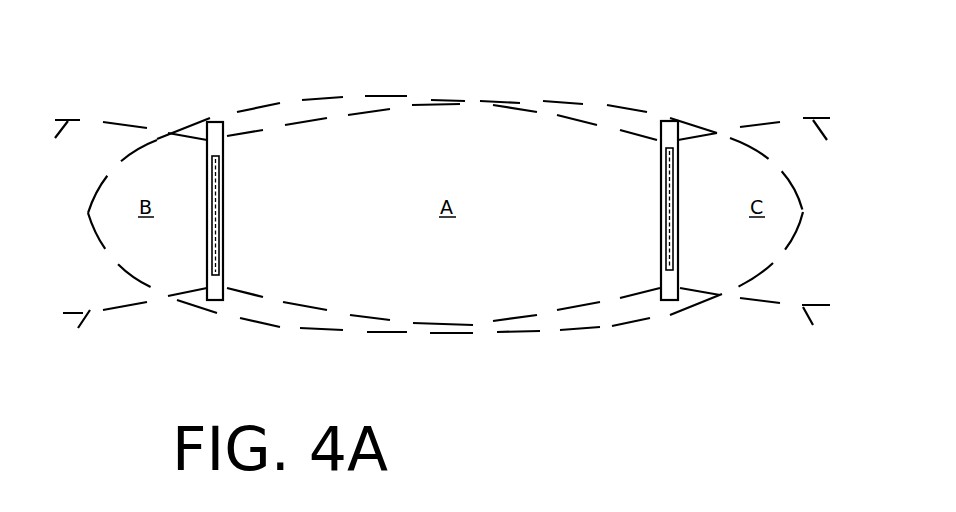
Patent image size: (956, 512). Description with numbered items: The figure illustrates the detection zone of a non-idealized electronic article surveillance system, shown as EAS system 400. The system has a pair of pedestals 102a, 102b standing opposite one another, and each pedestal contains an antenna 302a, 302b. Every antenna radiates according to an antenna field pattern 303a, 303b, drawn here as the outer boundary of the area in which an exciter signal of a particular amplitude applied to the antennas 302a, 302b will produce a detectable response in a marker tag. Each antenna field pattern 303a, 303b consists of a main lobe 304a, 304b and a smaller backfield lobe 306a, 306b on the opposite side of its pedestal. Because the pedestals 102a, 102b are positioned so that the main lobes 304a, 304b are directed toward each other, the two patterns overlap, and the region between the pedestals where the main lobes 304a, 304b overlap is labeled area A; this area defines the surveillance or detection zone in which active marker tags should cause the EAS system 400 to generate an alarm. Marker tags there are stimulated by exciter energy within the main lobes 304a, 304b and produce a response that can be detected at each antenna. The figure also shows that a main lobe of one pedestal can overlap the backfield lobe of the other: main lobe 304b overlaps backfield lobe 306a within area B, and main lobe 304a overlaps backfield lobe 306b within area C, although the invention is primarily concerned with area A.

The EAS system 400 is at (130, 84).
The pedestal 102a is at (223, 150).
The pedestal 102b is at (661, 162).
The antenna 302a is at (219, 210).
The antenna 302b is at (667, 210).
The antenna field pattern 303a is at (277, 280).
The antenna field pattern 303b is at (574, 291).
The main lobe 304a is at (650, 318).
The main lobe 304b is at (240, 320).
The backfield lobe 306a is at (122, 240).
The backfield lobe 306b is at (762, 236).